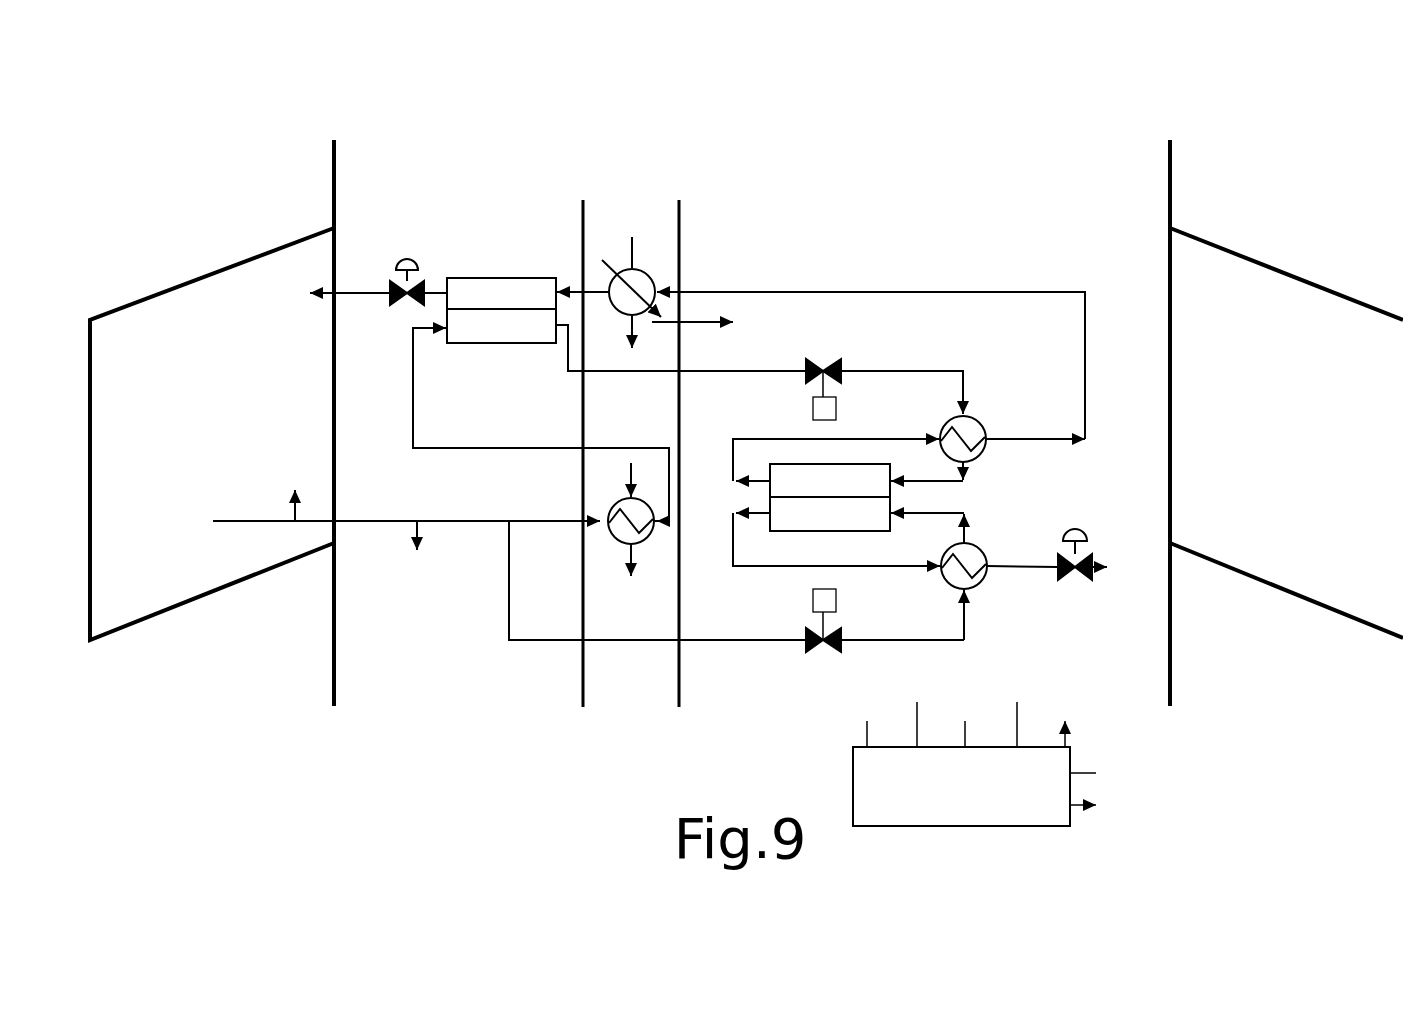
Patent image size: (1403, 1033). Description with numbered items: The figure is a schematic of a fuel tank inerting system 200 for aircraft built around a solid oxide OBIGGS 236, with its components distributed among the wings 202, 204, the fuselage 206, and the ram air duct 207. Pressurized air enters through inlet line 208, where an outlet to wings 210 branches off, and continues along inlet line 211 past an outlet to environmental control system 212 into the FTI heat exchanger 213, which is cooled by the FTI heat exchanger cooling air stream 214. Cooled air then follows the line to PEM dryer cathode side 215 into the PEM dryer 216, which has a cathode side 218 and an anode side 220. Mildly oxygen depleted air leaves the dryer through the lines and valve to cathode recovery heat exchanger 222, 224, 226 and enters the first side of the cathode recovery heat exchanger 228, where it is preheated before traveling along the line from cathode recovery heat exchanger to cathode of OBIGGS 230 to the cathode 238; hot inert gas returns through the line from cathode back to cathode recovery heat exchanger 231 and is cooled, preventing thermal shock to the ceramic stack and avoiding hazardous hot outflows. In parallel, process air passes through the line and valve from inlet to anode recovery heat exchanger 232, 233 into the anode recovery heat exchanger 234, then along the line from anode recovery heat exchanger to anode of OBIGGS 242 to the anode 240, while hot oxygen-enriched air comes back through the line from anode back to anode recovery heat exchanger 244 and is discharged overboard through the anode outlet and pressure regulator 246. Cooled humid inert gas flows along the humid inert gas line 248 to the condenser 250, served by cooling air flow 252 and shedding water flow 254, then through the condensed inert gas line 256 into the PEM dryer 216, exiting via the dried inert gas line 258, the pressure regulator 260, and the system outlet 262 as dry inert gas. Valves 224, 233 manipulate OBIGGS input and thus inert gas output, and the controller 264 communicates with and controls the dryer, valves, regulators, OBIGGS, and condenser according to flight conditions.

The fuel tank inerting system 200 is at (957, 113).
The wing 202 is at (128, 356).
The wing 204 is at (1270, 398).
The fuselage 206 is at (1030, 191).
The ram air duct 207 is at (611, 684).
The inlet line 208 is at (247, 527).
The outlet to wings 210 is at (290, 505).
The inlet line 211 is at (373, 519).
The outlet to environmental control system 212 is at (415, 537).
The FTI heat exchanger 213 is at (620, 548).
The FTI heat exchanger cooling air stream 214 is at (625, 472).
The line to PEM dryer cathode side 215 is at (527, 446).
The PEM dryer 216 is at (494, 268).
The cathode side 218 is at (480, 338).
The anode side 220 is at (480, 305).
The line to cathode recovery heat exchanger 222 is at (660, 371).
The valve to cathode recovery heat exchanger 224 is at (830, 355).
The line to cathode recovery heat exchanger 226 is at (915, 371).
The cathode recovery heat exchanger 228 is at (992, 418).
The line from cathode recovery heat exchanger to cathode of OBIGGS 230 is at (972, 478).
The line from cathode back to cathode recovery heat exchanger 231 is at (790, 437).
The line from inlet to anode recovery heat exchanger 232 is at (552, 638).
The valve from inlet to anode recovery heat exchanger 233 is at (830, 656).
The anode recovery heat exchanger 234 is at (940, 587).
The solid oxide OBIGGS 236 is at (921, 497).
The cathode 238 is at (809, 493).
The anode 240 is at (809, 526).
The line from anode recovery heat exchanger to anode of OBIGGS 242 is at (960, 512).
The line from anode back to anode recovery heat exchanger 244 is at (818, 565).
The anode outlet and pressure regulator 246 is at (1082, 586).
The humid inert gas line 248 is at (870, 290).
The condenser 250 is at (660, 268).
The cooling air flow 252 is at (631, 264).
The water flow 254 is at (708, 322).
The condensed inert gas line 256 is at (575, 290).
The dried inert gas line 258 is at (430, 298).
The pressure regulator 260 is at (405, 252).
The system outlet 262 is at (375, 292).
The controller 264 is at (936, 797).